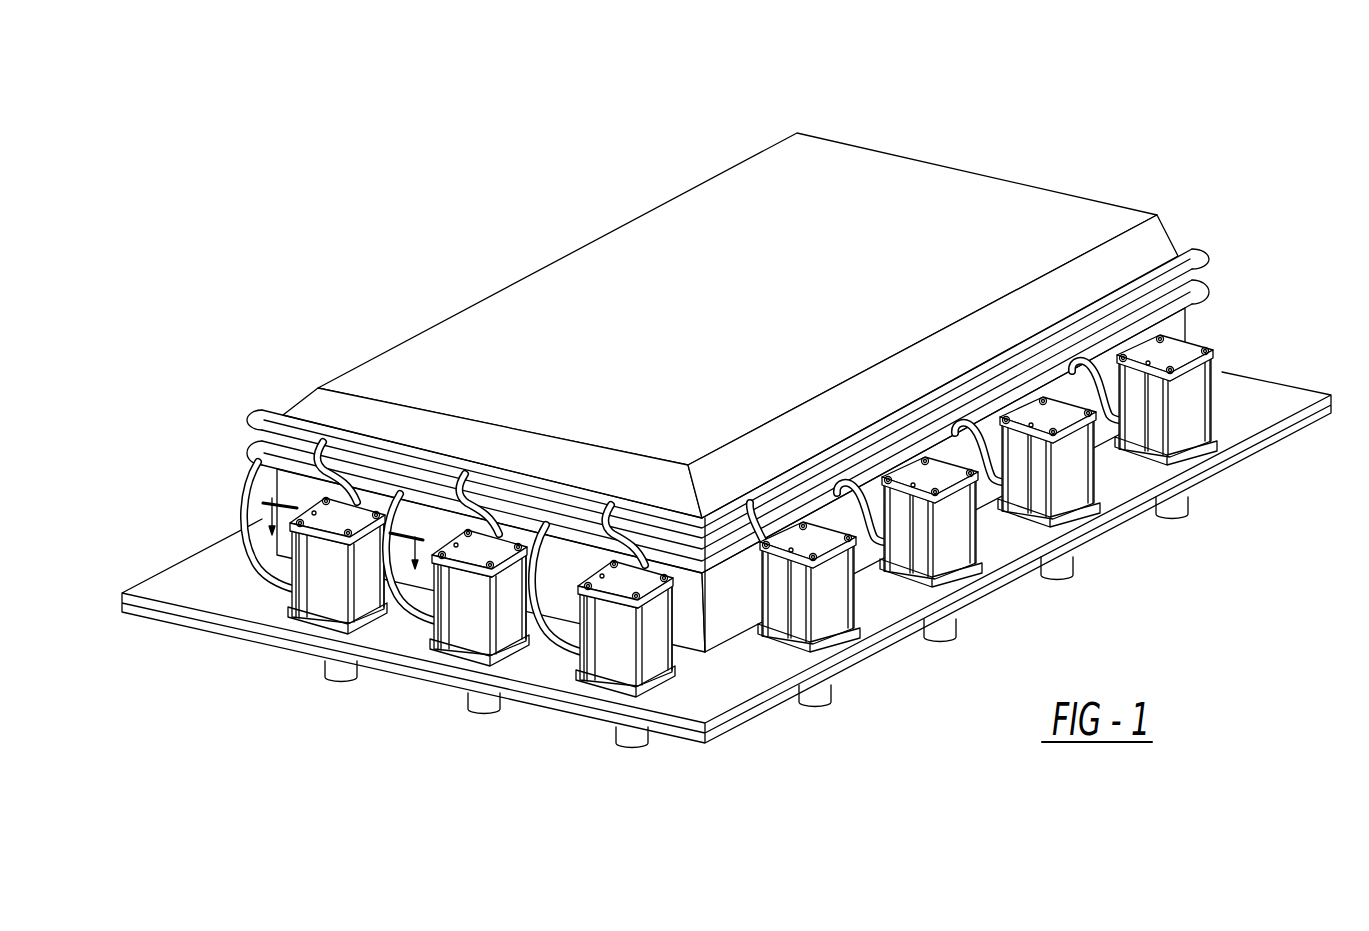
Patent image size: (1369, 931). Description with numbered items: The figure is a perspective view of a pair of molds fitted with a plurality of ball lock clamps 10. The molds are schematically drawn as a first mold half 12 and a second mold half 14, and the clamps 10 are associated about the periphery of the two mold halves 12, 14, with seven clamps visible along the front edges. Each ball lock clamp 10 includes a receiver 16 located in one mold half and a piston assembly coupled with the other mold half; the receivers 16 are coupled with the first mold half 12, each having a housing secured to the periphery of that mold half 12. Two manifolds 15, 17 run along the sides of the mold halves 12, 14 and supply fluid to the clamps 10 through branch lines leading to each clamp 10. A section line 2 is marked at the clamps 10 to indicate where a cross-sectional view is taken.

The ball lock clamp 10 is at (982, 531).
The first mold half 12 is at (1270, 448).
The second mold half 14 is at (1052, 217).
The manifold 15 is at (1044, 338).
The receiver 16 is at (337, 677).
The manifold 17 is at (1197, 306).
The section line indicator 2 is at (350, 522).